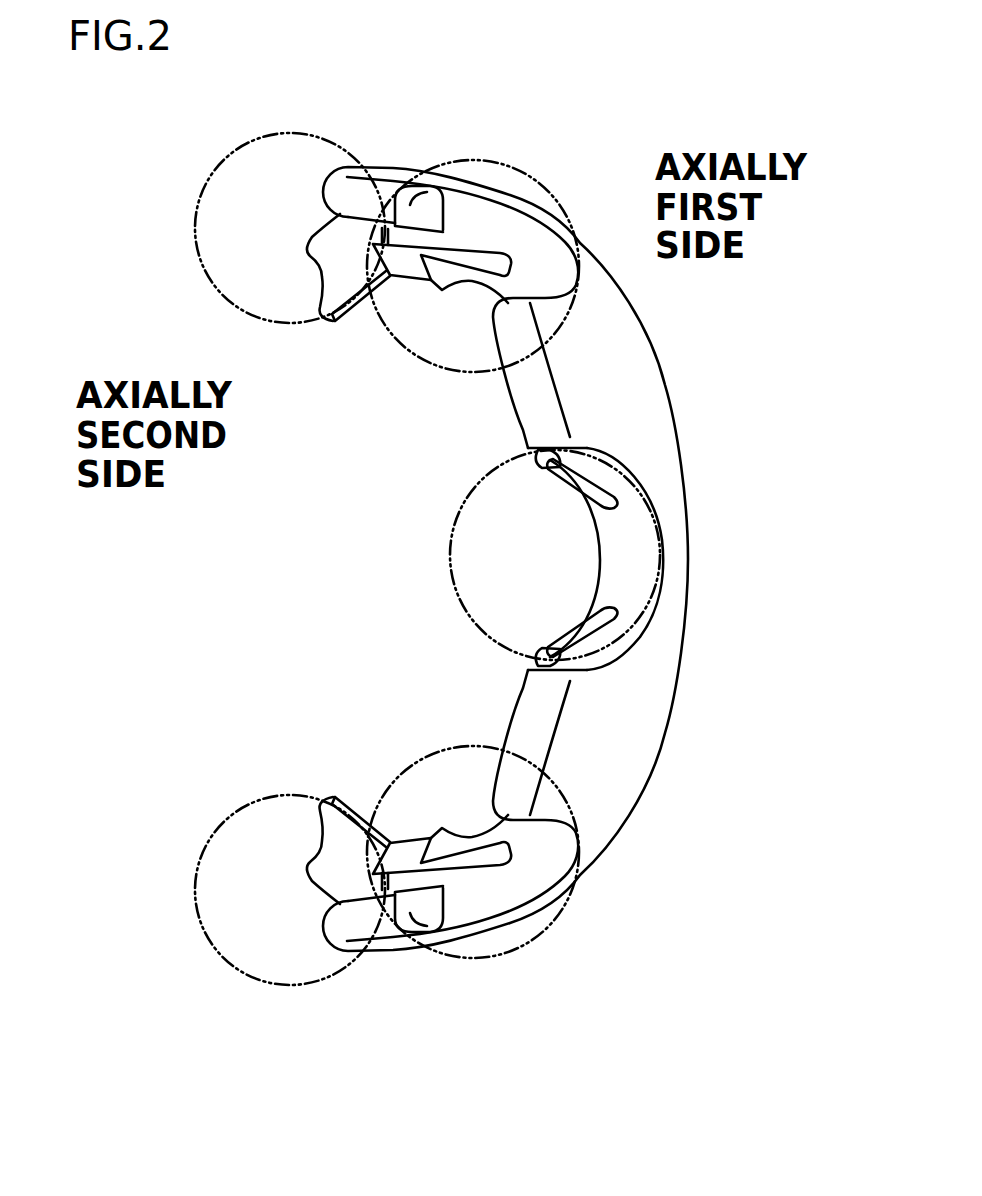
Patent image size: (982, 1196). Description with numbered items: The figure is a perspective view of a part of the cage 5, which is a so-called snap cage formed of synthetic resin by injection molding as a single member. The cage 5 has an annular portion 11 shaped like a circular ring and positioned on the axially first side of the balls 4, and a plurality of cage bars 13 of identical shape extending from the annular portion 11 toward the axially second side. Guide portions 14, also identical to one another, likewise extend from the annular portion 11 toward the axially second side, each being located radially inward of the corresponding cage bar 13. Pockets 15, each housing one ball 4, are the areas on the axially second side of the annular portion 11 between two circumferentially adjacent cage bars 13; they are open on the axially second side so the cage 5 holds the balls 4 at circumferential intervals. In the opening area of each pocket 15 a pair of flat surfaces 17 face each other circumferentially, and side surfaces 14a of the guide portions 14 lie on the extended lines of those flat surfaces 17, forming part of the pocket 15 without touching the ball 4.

The ball 4 is at (197, 195).
The cage 5 is at (686, 461).
The annular portion 11 is at (680, 520).
The cage bar 13 is at (463, 183).
The guide portion 14 is at (444, 247).
The side surface 14a is at (390, 277).
The pocket 15 is at (357, 241).
The flat surface 17 is at (420, 203).